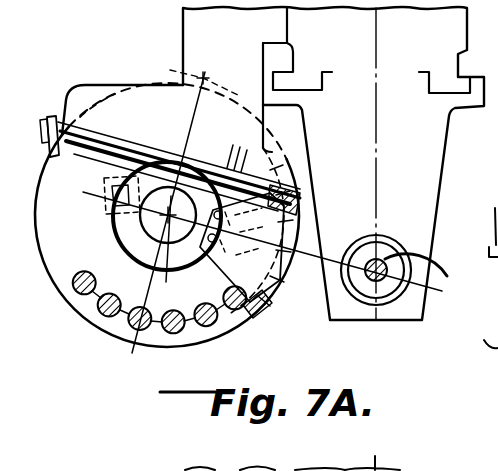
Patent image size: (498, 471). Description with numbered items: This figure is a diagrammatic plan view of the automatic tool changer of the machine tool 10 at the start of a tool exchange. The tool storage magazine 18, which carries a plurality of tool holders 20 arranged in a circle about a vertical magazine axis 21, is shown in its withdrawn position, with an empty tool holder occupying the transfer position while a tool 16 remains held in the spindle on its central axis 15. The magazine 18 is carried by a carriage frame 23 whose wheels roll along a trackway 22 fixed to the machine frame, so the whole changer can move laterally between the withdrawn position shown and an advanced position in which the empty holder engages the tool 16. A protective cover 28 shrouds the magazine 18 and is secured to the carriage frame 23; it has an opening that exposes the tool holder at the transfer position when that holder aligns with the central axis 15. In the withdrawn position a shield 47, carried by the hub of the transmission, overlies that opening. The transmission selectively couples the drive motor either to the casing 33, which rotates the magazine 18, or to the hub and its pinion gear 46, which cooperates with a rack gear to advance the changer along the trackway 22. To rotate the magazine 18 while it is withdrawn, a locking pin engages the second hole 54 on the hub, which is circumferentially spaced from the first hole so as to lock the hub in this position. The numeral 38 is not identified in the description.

The machine tool 10 is at (432, 308).
The central axis 15 is at (433, 273).
The tool 16 is at (382, 286).
The tool storage magazine 18 is at (100, 334).
The tool holders 20 is at (300, 217).
The magazine axis 21 is at (181, 266).
The trackway 22 is at (67, 127).
The carriage frame 23 is at (108, 160).
The protective cover 28 is at (242, 327).
The casing 33 is at (214, 150).
The stop 38 is at (491, 123).
The pinion gear 46 is at (244, 232).
The shield 47 is at (286, 272).
The second hole 54 is at (88, 226).